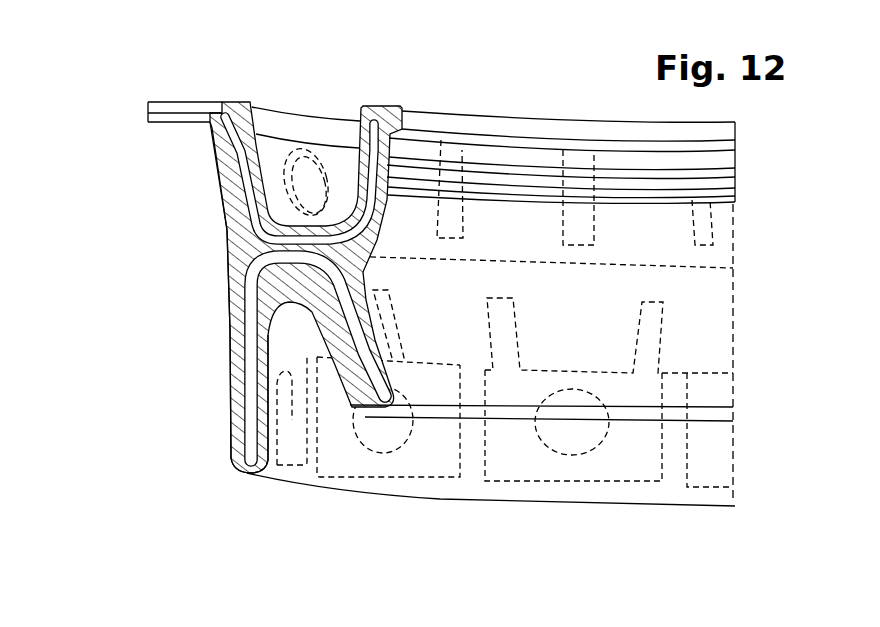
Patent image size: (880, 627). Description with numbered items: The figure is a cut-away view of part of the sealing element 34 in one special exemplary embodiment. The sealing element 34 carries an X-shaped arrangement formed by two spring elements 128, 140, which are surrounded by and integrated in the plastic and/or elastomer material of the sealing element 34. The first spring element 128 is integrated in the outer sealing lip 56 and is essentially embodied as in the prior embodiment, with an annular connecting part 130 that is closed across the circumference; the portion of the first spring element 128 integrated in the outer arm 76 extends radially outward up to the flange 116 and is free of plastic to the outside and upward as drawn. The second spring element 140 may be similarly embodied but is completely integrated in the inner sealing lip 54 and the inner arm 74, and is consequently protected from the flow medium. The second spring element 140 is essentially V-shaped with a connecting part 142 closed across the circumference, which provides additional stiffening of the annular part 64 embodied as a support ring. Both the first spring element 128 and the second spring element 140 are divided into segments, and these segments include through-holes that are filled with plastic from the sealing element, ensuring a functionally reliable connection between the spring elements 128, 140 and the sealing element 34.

The sealing element 34 is at (366, 506).
The inner sealing lip 54 is at (358, 372).
The outer sealing lip 56 is at (401, 110).
The annular part 64 is at (665, 285).
The inner arm 74 is at (230, 440).
The outer arm 76 is at (228, 228).
The flange 116 is at (156, 122).
The first spring element 128 is at (246, 232).
The annular connecting part 130 is at (255, 260).
The second spring element 140 is at (230, 388).
The connecting part 142 is at (250, 292).